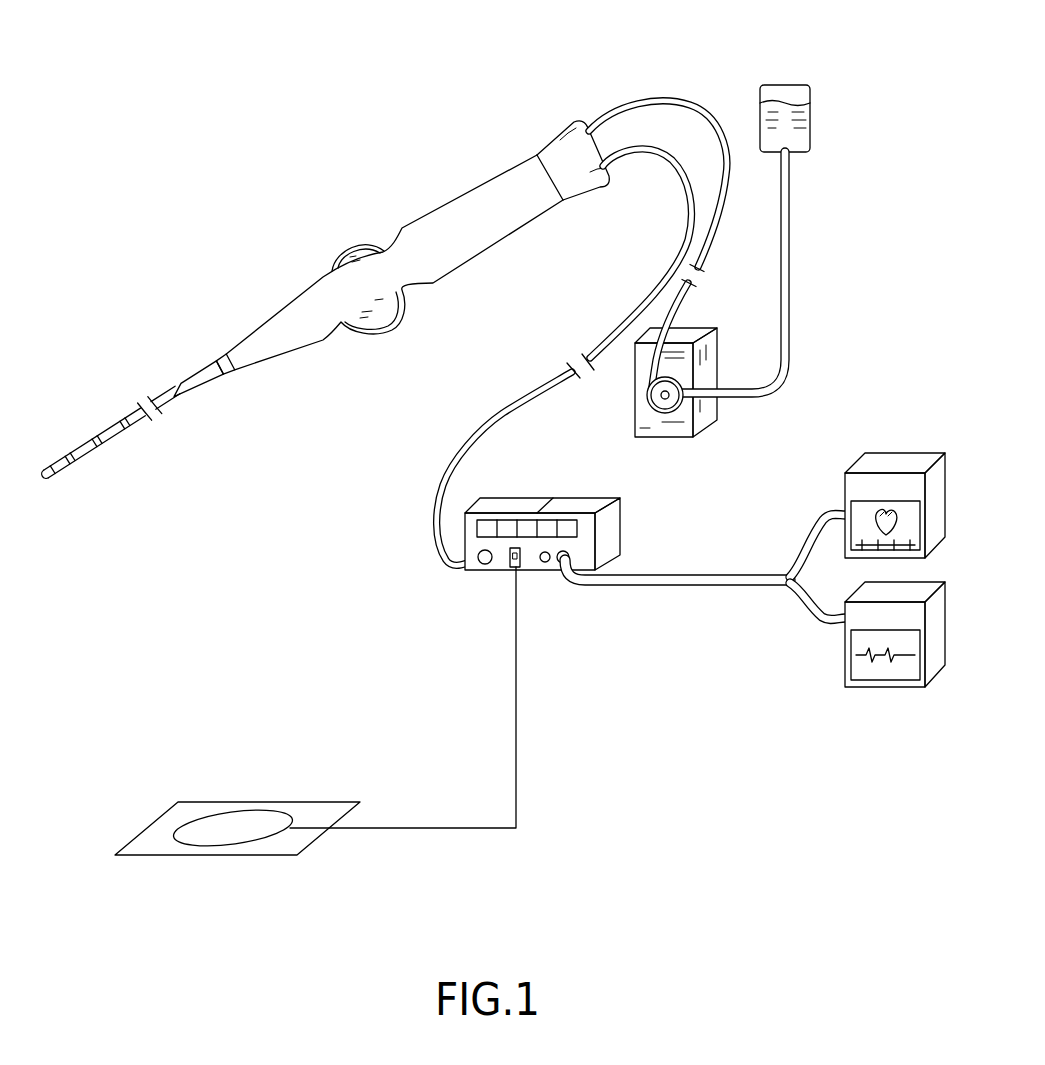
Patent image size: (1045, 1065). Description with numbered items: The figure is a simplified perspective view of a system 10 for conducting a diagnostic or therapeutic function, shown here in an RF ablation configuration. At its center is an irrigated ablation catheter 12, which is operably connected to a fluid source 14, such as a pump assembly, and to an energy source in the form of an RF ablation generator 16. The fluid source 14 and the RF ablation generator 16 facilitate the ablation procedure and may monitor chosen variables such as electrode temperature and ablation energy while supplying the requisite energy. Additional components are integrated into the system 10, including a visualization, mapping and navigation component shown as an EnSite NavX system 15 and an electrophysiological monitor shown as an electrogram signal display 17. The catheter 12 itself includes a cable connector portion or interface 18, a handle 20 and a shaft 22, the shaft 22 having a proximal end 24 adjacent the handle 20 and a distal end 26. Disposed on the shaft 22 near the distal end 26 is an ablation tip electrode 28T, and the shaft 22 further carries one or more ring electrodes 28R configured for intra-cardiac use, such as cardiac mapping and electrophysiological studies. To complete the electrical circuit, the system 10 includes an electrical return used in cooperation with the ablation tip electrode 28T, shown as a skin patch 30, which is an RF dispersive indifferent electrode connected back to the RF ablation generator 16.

The system 10 is at (152, 65).
The irrigated ablation catheter 12 is at (376, 161).
The fluid source 14 is at (738, 304).
The EnSite NavX system 15 is at (896, 452).
The RF ablation generator 16 is at (571, 466).
The electrogram signal display 17 is at (843, 690).
The cable connector portion 18 is at (553, 140).
The handle 20 is at (457, 197).
The shaft 22 is at (158, 406).
The proximal end 24 is at (206, 425).
The distal end 26 is at (57, 505).
The ablation tip electrode 28T is at (46, 466).
The ring electrodes 28R is at (73, 463).
The skin patch 30 is at (252, 830).